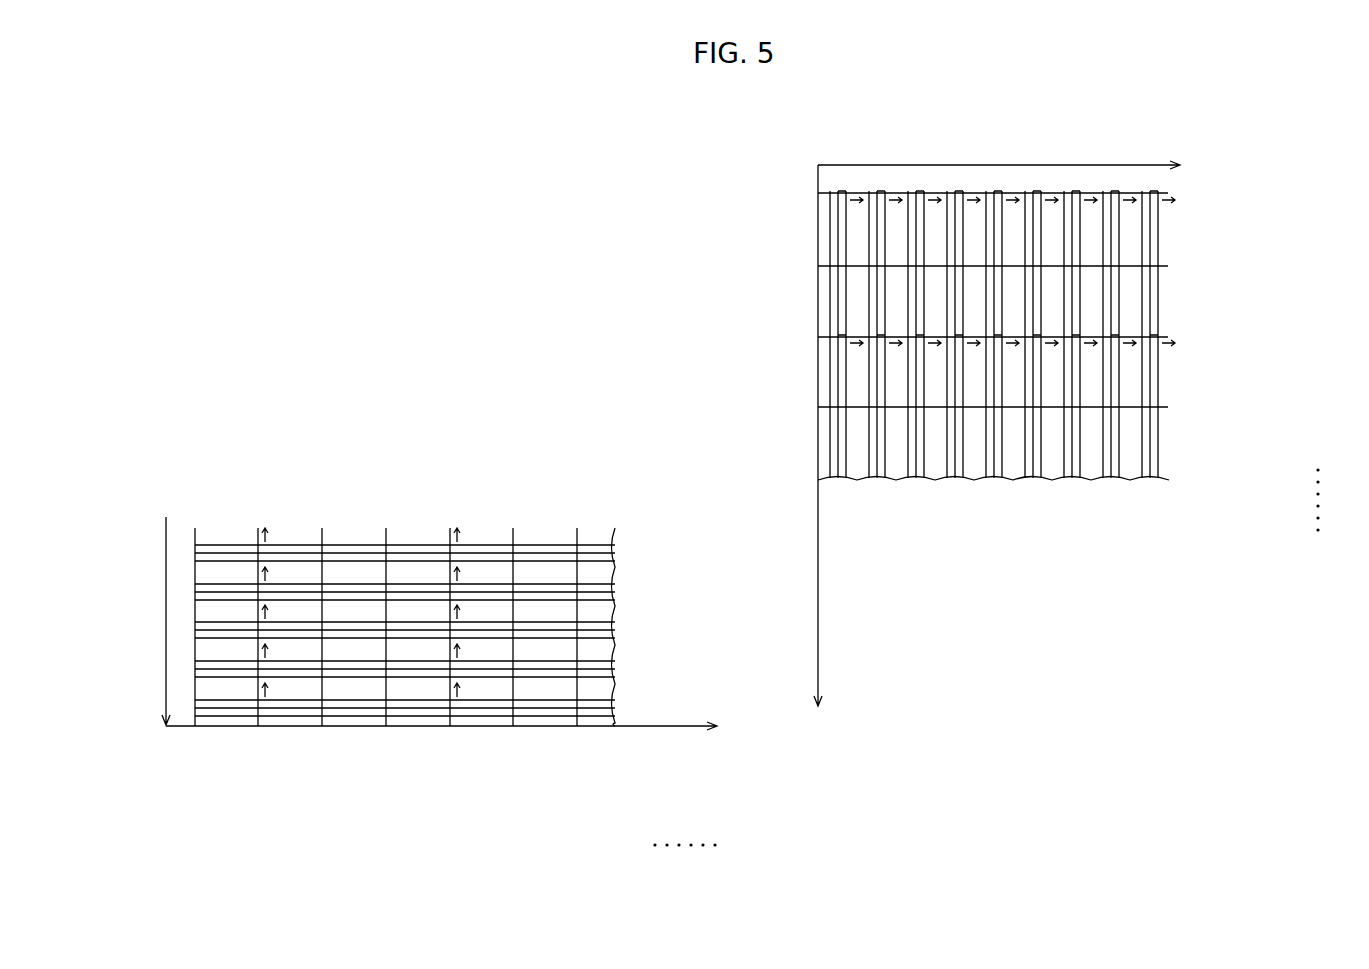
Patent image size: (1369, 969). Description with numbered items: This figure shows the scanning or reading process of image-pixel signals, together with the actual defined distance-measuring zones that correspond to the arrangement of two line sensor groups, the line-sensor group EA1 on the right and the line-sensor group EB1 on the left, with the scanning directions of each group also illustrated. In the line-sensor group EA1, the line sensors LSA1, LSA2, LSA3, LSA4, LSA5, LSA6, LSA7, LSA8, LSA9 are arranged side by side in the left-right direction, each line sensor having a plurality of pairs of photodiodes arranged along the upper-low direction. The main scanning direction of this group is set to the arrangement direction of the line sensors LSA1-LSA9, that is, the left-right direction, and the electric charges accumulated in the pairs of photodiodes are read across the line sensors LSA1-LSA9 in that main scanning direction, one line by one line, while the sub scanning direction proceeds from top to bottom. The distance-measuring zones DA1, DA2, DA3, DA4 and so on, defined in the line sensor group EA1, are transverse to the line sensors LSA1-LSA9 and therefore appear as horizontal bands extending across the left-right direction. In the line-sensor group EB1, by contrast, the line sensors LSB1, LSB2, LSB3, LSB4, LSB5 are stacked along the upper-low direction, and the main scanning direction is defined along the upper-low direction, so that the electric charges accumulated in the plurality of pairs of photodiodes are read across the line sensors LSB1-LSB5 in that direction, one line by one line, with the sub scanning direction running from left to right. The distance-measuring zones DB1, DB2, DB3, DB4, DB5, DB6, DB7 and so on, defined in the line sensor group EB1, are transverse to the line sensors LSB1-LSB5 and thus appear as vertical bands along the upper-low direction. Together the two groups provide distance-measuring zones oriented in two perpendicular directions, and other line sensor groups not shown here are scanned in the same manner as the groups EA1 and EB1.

The line-sensor group EA1 is at (767, 302).
The line-sensor group EB1 is at (370, 476).
The line sensor LSA1 is at (847, 448).
The line sensor LSA2 is at (885, 448).
The line sensor LSA3 is at (922, 448).
The line sensor LSA4 is at (964, 448).
The line sensor LSA5 is at (1002, 448).
The line sensor LSA6 is at (1039, 448).
The line sensor LSA7 is at (1081, 448).
The line sensor LSA8 is at (1119, 448).
The line sensor LSA9 is at (1156, 448).
The line sensor LSB1 is at (592, 543).
The line sensor LSB2 is at (600, 577).
The line sensor LSB3 is at (600, 614).
The line sensor LSB4 is at (600, 653).
The line sensor LSB5 is at (600, 692).
The distance-measuring zone DA1 is at (1188, 234).
The distance-measuring zone DA2 is at (1188, 304).
The distance-measuring zone DA3 is at (1188, 376).
The distance-measuring zone DA4 is at (1188, 447).
The distance-measuring zone DB1 is at (231, 748).
The distance-measuring zone DB2 is at (294, 748).
The distance-measuring zone DB3 is at (357, 748).
The distance-measuring zone DB4 is at (421, 748).
The distance-measuring zone DB5 is at (485, 748).
The distance-measuring zone DB6 is at (548, 748).
The distance-measuring zone DB7 is at (611, 748).